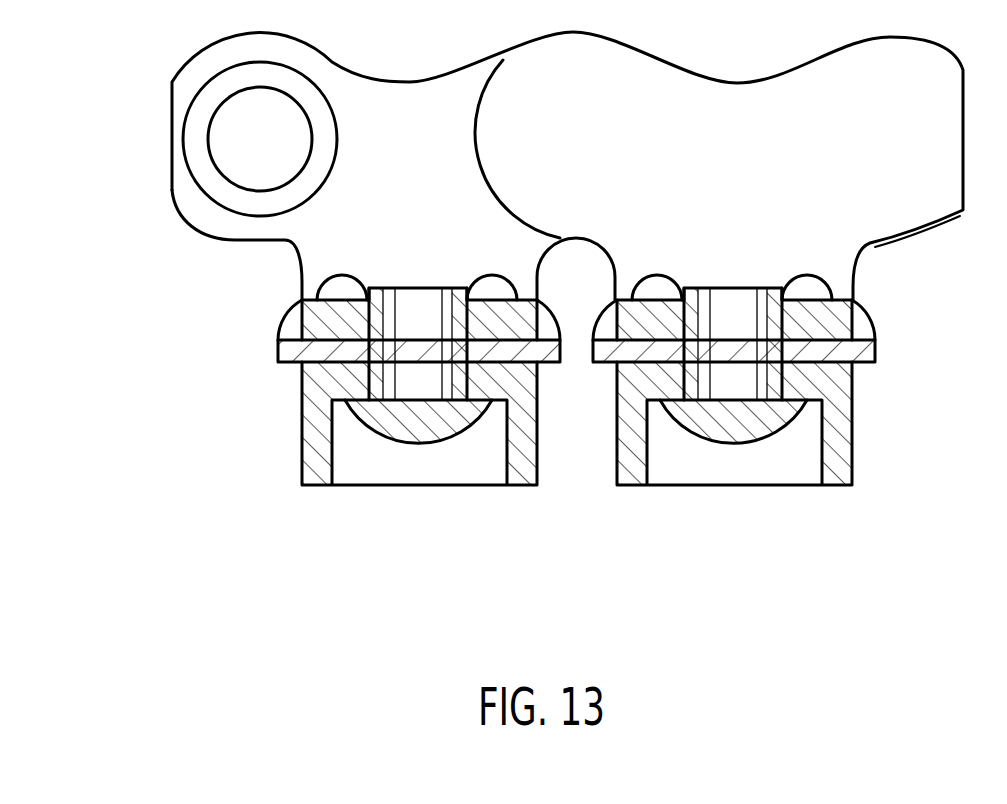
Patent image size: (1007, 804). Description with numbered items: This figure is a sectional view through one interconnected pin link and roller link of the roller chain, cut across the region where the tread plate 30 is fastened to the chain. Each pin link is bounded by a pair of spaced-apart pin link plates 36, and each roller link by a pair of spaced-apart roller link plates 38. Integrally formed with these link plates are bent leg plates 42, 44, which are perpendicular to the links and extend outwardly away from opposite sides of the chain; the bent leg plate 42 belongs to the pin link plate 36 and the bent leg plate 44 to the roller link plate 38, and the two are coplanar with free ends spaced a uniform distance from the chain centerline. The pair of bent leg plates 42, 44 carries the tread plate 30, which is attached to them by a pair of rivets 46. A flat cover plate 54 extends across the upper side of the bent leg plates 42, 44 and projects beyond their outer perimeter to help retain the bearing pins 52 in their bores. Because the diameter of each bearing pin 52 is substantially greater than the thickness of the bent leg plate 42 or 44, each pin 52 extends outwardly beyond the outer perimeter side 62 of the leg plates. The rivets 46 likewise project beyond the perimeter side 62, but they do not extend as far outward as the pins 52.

The tread plate 30 is at (302, 440).
The pin link plate 36 is at (724, 170).
The roller link plate 38 is at (412, 193).
The bent leg plate 42 is at (866, 318).
The bent leg plate 44 is at (300, 320).
The rivet 46 is at (413, 452).
The bearing pin 52 is at (482, 277).
The cover plate 54 is at (278, 350).
The outer perimeter side 62 is at (310, 290).